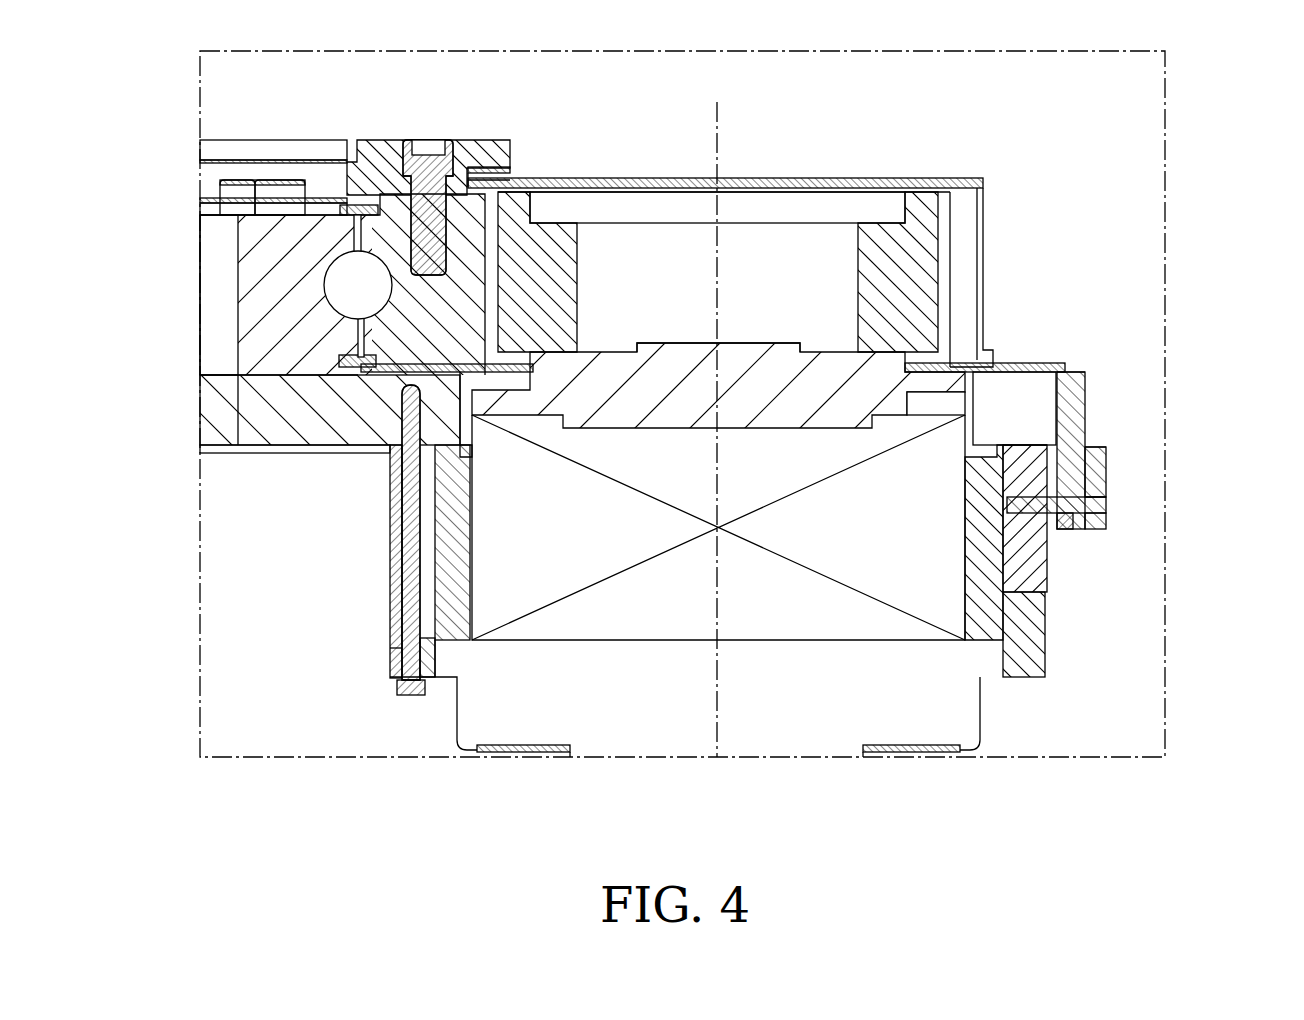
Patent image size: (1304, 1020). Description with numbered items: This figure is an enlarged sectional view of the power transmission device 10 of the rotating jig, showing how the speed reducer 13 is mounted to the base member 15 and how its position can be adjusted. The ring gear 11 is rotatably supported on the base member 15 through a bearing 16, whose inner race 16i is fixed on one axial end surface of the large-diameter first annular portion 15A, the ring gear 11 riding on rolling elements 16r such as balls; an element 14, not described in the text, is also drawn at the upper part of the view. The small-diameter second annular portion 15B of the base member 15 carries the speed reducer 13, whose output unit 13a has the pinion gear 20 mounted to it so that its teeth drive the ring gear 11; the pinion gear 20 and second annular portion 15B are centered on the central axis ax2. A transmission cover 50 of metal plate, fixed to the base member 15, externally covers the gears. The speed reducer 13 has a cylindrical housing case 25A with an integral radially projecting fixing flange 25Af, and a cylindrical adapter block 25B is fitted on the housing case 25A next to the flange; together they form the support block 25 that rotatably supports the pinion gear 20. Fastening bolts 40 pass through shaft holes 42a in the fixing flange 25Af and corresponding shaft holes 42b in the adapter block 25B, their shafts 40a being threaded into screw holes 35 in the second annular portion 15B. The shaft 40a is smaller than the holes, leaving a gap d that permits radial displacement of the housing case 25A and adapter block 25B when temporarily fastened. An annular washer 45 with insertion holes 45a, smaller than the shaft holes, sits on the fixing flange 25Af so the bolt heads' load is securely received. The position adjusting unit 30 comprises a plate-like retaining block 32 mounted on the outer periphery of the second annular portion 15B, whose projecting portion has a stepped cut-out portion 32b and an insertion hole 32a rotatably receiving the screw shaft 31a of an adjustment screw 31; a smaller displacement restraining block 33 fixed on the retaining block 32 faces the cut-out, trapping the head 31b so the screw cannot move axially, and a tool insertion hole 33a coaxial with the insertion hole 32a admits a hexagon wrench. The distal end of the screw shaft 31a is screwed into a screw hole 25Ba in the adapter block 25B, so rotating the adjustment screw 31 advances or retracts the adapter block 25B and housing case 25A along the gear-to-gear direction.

The power transmission device 10 is at (1012, 338).
The ring gear 11 is at (486, 185).
The speed reducer 13 is at (652, 411).
The output unit 13a is at (778, 345).
The upper plate 14 is at (372, 145).
The base member 15 is at (255, 452).
The first annular portion 15A is at (322, 450).
The second annular portion 15B is at (1082, 377).
The bearing 16 is at (542, 400).
The rolling elements 16r is at (325, 278).
The inner race 16i is at (250, 350).
The pinion gear 20 is at (953, 212).
The support block 25 is at (850, 400).
The housing case 25A is at (850, 450).
The fixing flange 25Af is at (1015, 635).
The adapter block 25B is at (981, 400).
The screw hole 25Ba is at (1010, 445).
The position adjusting unit 30 is at (1148, 454).
The adjustment screw 31 is at (1160, 440).
The screw shaft 31a is at (1082, 400).
The head 31b is at (1075, 532).
The retaining block 32 is at (1161, 475).
The insertion hole 32a is at (1078, 535).
The cut-out portion 32b is at (1092, 420).
The displacement restraining block 33 is at (1130, 507).
The tool insertion hole 33a is at (1104, 520).
The screw holes 35 is at (405, 440).
The fastening bolt 40 is at (410, 697).
The shaft 40a is at (390, 650).
The shaft holes 42a is at (390, 637).
The shaft holes 42b is at (390, 548).
The washer 45 is at (387, 672).
The insertion holes 45a is at (423, 694).
The transmission cover 50 is at (655, 177).
The gap d is at (390, 620).
The central axis ax2 is at (718, 130).